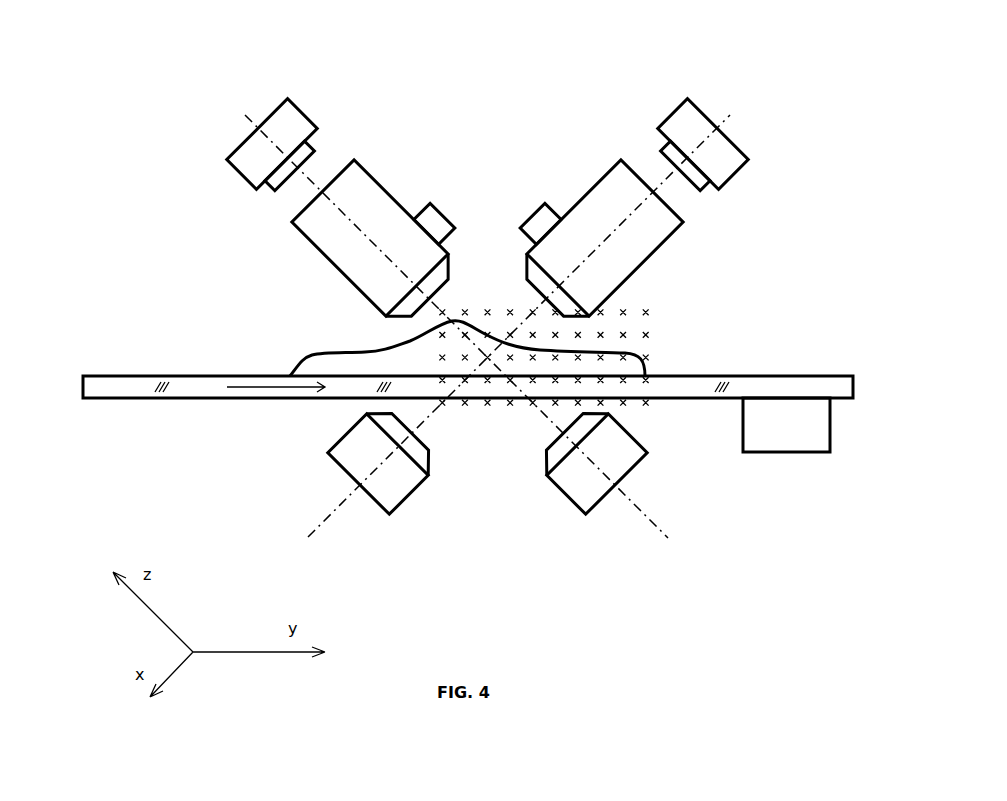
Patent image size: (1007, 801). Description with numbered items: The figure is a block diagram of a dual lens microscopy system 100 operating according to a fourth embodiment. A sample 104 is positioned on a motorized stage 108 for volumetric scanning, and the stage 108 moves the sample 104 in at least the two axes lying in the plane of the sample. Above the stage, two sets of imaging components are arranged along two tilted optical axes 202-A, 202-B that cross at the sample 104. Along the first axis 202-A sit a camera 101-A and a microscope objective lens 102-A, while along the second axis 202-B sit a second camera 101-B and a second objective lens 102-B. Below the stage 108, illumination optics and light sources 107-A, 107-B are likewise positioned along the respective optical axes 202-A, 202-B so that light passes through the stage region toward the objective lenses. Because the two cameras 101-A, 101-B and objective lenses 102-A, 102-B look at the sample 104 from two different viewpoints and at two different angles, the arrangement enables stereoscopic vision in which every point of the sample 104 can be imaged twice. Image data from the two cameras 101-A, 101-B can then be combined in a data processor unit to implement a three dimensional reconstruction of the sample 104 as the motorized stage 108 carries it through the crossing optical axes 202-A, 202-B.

The optical microscopy system 100 is at (210, 114).
The camera 101-A is at (305, 115).
The camera 101-B is at (670, 112).
The objective lens 102-A is at (404, 210).
The objective lens 102-B is at (674, 234).
The sample 104 is at (645, 358).
The illumination optics and light source 107-A is at (562, 498).
The illumination optics and light source 107-B is at (410, 496).
The motorized stage 108 is at (233, 376).
The optical axis 202-A is at (637, 502).
The optical axis 202-B is at (335, 510).